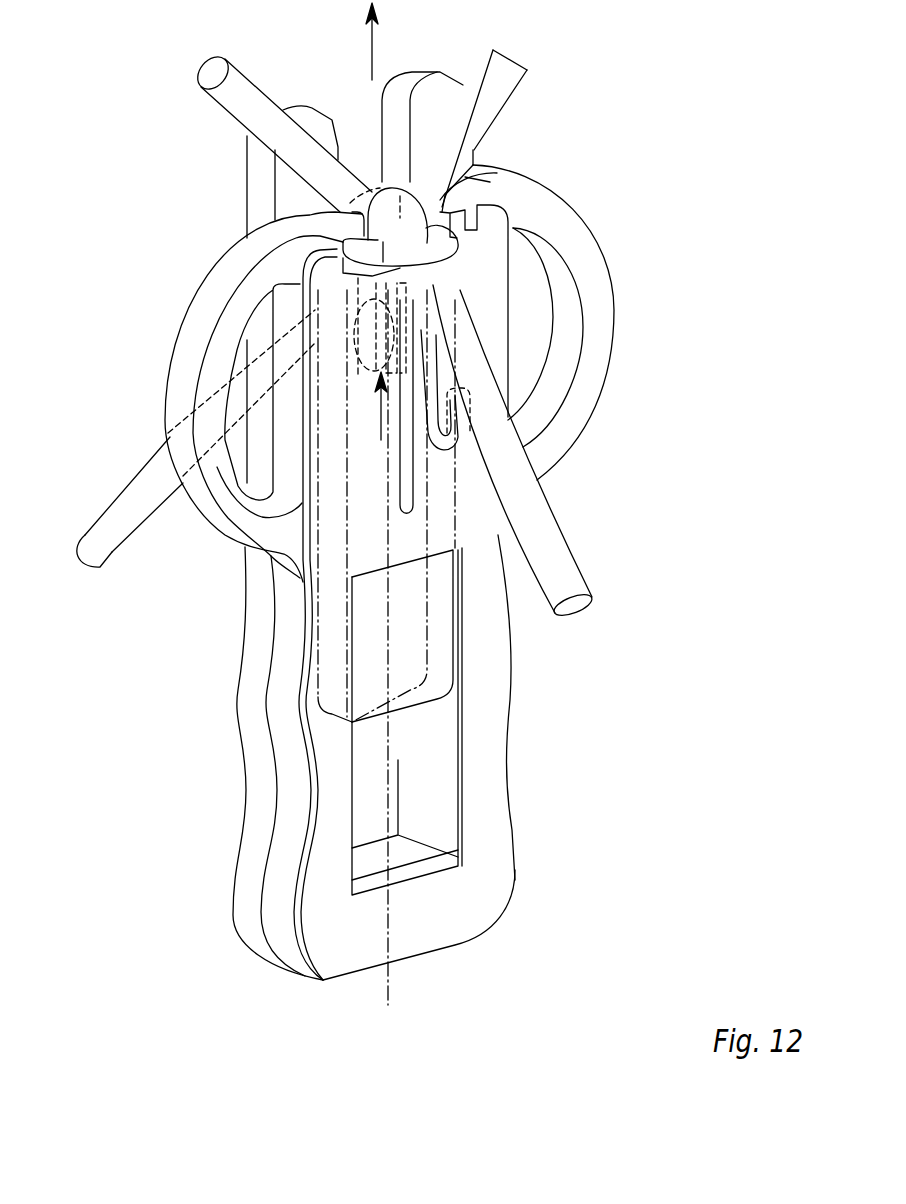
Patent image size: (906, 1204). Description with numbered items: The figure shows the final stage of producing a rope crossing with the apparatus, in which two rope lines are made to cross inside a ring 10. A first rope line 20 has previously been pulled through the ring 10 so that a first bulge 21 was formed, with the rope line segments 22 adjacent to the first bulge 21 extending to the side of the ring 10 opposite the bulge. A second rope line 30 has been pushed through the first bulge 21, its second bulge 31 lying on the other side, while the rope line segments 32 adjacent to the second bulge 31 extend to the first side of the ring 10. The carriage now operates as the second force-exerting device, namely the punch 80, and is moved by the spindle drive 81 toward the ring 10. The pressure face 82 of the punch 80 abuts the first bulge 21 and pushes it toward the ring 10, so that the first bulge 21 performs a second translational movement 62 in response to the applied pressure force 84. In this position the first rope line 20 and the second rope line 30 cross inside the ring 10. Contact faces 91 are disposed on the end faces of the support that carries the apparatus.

The ring 10 is at (447, 247).
The first rope line 20 is at (389, 123).
The first bulge 21 is at (370, 270).
The rope line segments 22 is at (235, 110).
The second rope line 30 is at (563, 600).
The second bulge 31 is at (372, 192).
The rope line segments 32 is at (351, 459).
The second translational movement 62 is at (380, 41).
The punch 80 is at (396, 538).
The spindle drive 81 is at (388, 785).
The pressure face 82 is at (350, 282).
The pressure force 84 is at (368, 406).
The contact faces 91 is at (462, 180).